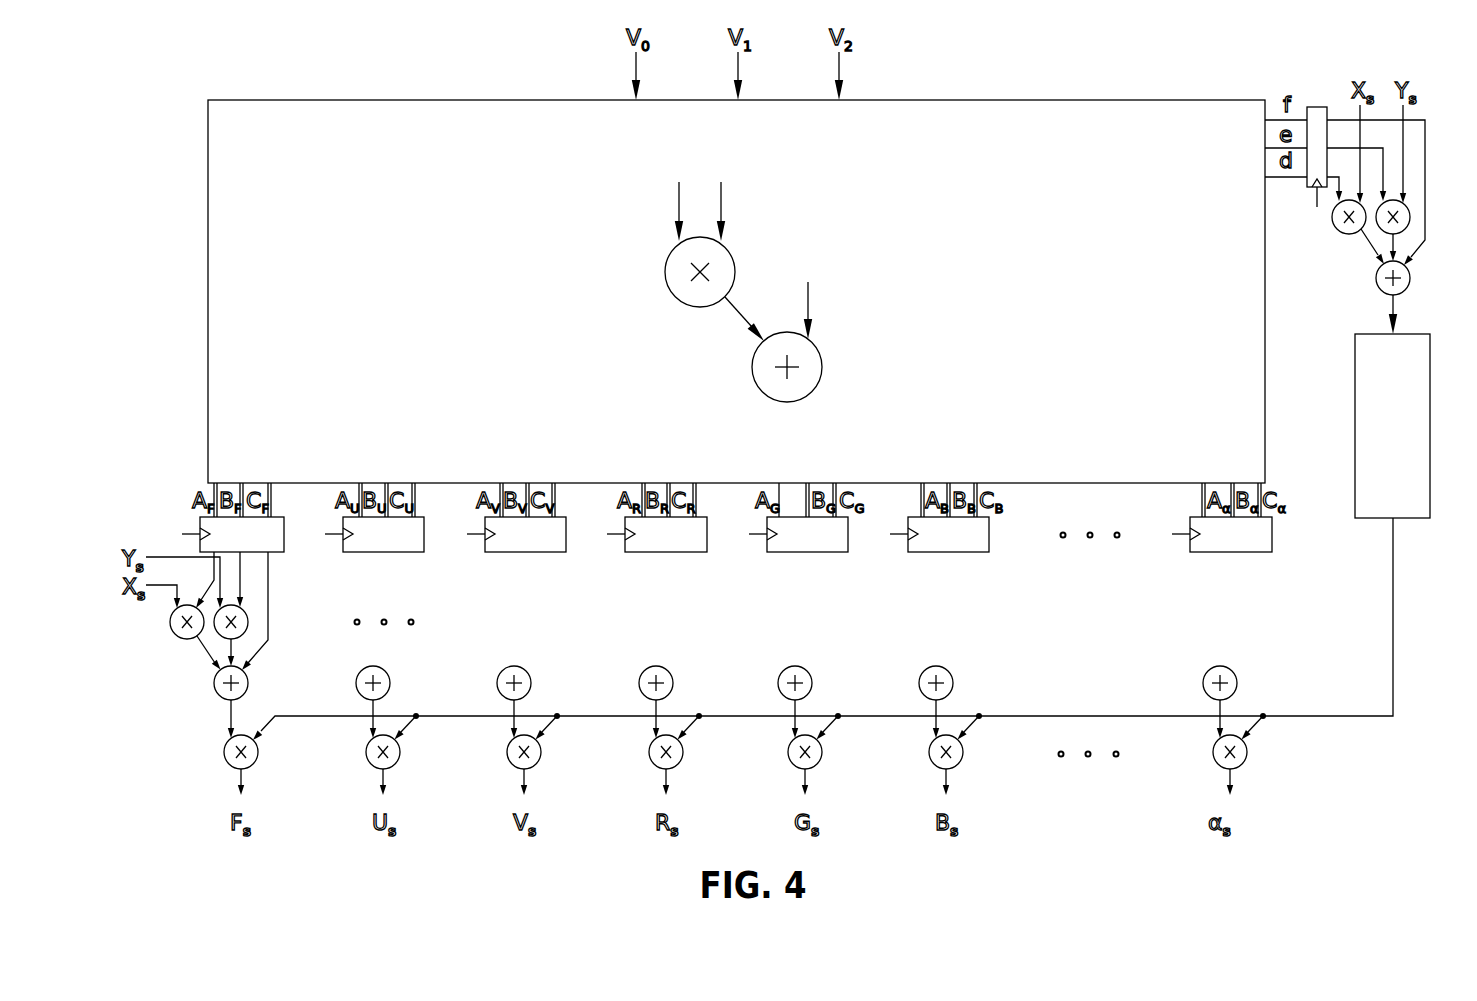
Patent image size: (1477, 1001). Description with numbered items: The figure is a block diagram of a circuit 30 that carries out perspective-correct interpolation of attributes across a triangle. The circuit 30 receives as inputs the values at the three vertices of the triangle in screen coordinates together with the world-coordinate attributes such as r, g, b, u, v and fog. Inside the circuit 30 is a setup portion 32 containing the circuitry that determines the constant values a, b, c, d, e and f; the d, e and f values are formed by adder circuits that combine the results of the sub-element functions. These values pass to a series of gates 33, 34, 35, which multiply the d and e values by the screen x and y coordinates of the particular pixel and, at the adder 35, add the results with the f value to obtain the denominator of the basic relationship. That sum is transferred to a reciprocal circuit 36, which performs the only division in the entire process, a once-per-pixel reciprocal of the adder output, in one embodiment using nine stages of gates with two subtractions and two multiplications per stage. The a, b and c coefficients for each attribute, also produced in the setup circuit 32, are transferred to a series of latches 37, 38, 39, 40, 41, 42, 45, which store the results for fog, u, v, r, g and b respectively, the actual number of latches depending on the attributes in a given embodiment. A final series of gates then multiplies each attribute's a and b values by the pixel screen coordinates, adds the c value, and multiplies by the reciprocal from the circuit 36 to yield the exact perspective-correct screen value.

The circuit 30 is at (186, 184).
The setup portion 32 is at (933, 292).
The gate 33 is at (1337, 227).
The gate 34 is at (1408, 213).
The adder 35 is at (1412, 285).
The reciprocal circuit 36 is at (1392, 426).
The latch 37 is at (276, 540).
The latch 38 is at (416, 540).
The latch 39 is at (558, 540).
The latch 40 is at (699, 540).
The latch 41 is at (840, 540).
The latch 42 is at (981, 540).
The latch 45 is at (1264, 540).